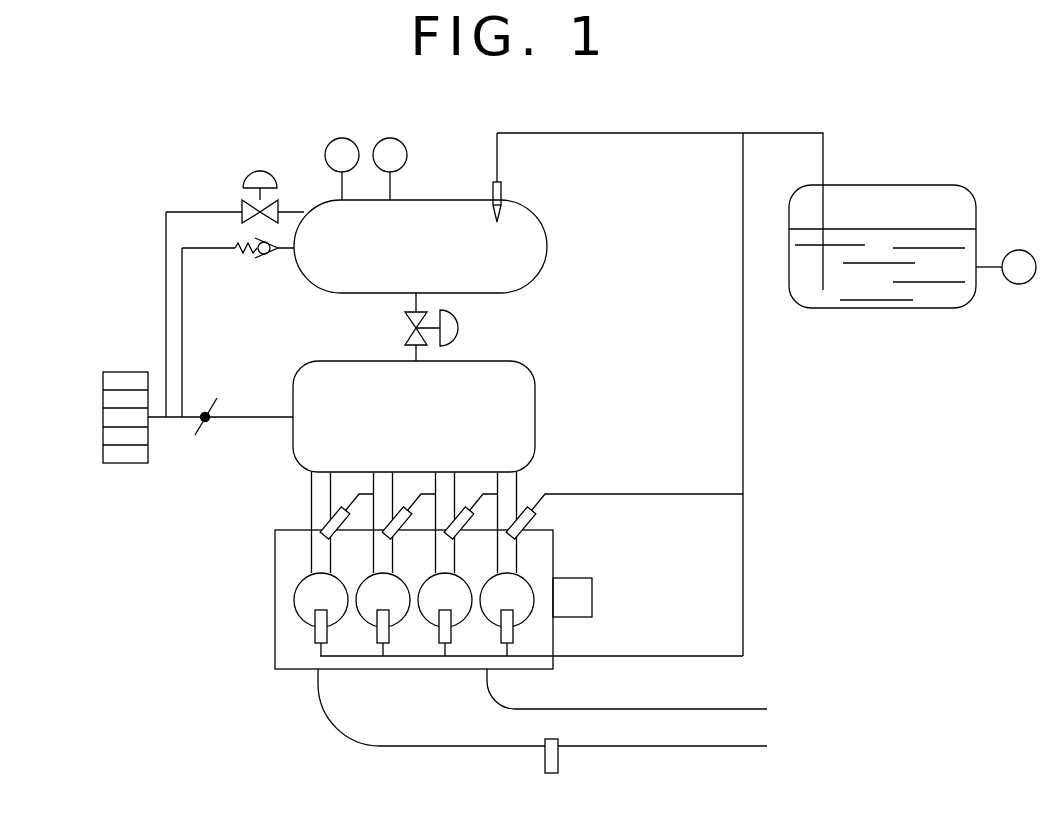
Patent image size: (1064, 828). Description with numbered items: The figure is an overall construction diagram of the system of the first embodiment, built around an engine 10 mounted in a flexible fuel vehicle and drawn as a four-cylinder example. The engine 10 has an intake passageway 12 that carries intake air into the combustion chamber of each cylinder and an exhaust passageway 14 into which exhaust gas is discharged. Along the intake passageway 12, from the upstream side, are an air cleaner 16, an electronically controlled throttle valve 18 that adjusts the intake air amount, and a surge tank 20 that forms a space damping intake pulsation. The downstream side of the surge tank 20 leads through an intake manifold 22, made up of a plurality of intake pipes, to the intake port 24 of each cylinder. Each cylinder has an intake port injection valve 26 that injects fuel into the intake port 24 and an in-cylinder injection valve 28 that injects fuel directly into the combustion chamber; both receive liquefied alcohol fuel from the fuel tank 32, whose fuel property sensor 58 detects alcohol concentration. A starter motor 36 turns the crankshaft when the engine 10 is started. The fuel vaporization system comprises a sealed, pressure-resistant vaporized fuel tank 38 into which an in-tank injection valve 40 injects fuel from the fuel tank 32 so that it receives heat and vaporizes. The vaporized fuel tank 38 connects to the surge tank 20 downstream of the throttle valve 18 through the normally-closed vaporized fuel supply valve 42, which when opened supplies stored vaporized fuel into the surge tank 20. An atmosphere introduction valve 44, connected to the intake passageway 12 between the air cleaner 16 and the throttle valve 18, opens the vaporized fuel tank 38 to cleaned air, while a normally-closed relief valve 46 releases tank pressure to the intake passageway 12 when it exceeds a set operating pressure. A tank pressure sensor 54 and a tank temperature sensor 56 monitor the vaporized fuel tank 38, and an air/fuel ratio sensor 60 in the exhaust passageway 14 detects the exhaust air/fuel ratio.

The engine 10 is at (209, 591).
The intake passageway 12 is at (251, 414).
The exhaust passageway 14 is at (343, 718).
The air cleaner 16 is at (124, 463).
The throttle valve 18 is at (200, 433).
The surge tank 20 is at (518, 398).
The intake manifold 22 is at (318, 507).
The intake port 24 is at (320, 555).
The intake port injection valve 26 is at (532, 519).
The in-cylinder injection valve 28 is at (318, 632).
The fuel tank 32 is at (887, 197).
The starter motor 36 is at (582, 597).
The vaporized fuel tank 38 is at (533, 253).
The in-tank injection valve 40 is at (502, 192).
The vaporized fuel supply valve 42 is at (458, 328).
The atmosphere introduction valve 44 is at (258, 170).
The relief valve 46 is at (265, 258).
The tank pressure sensor 54 is at (403, 142).
The tank temperature sensor 56 is at (332, 142).
The fuel property sensor 58 is at (1018, 250).
The air/fuel ratio sensor 60 is at (548, 763).